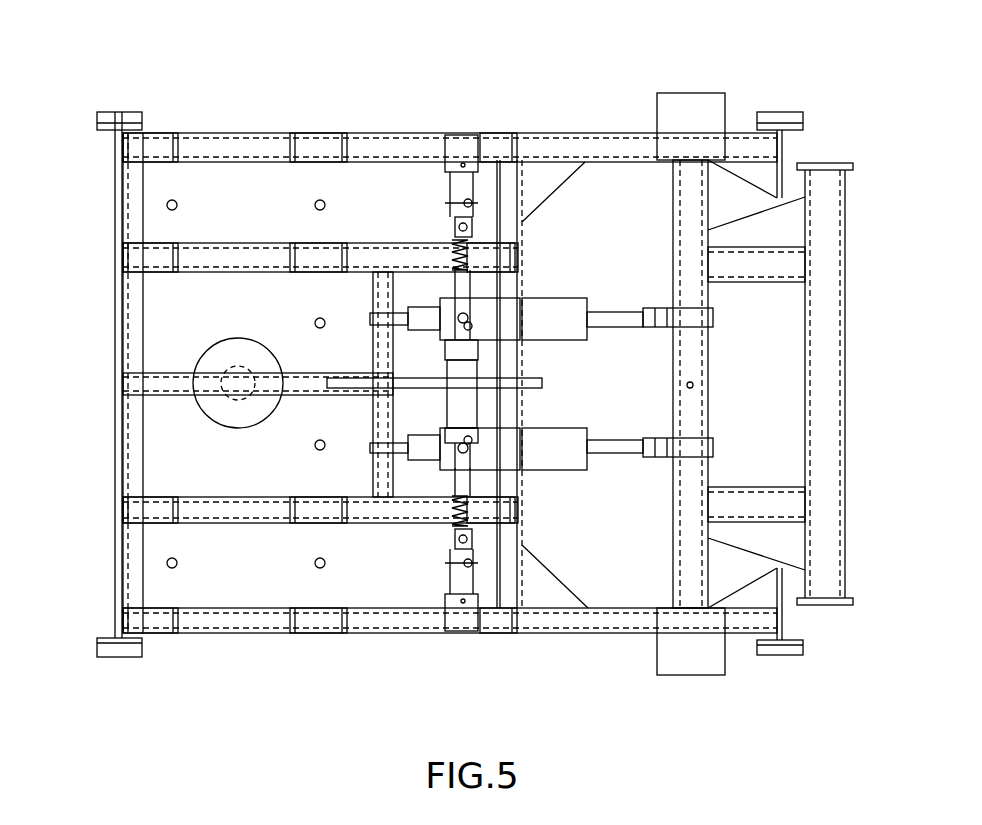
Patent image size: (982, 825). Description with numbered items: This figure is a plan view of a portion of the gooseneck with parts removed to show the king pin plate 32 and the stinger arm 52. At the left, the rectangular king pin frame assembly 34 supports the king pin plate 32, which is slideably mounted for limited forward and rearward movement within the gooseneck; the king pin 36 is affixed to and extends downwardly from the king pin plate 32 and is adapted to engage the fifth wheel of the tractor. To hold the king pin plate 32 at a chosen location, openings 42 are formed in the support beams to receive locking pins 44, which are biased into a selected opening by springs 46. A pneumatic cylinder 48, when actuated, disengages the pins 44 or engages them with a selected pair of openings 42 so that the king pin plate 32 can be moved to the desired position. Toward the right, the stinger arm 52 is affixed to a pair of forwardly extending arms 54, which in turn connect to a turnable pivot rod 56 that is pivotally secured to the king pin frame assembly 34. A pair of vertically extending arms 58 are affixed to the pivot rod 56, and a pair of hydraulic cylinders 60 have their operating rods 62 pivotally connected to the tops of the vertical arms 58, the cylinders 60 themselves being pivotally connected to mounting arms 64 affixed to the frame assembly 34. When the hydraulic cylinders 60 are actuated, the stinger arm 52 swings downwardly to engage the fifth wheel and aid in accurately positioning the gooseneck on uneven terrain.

The king pin plate 32 is at (198, 334).
The king pin frame assembly 34 is at (378, 300).
The king pin 36 is at (238, 400).
The openings 42 is at (447, 137).
The locking pins 44 is at (458, 188).
The springs 46 is at (452, 260).
The pneumatic cylinder 48 is at (470, 412).
The stinger arm 52 is at (828, 590).
The forwardly extending arms 54 is at (784, 270).
The pivot rod 56 is at (683, 562).
The vertically extending arms 58 is at (660, 322).
The hydraulic cylinders 60 is at (553, 290).
The operating rods 62 is at (610, 290).
The mounting arms 64 is at (407, 320).